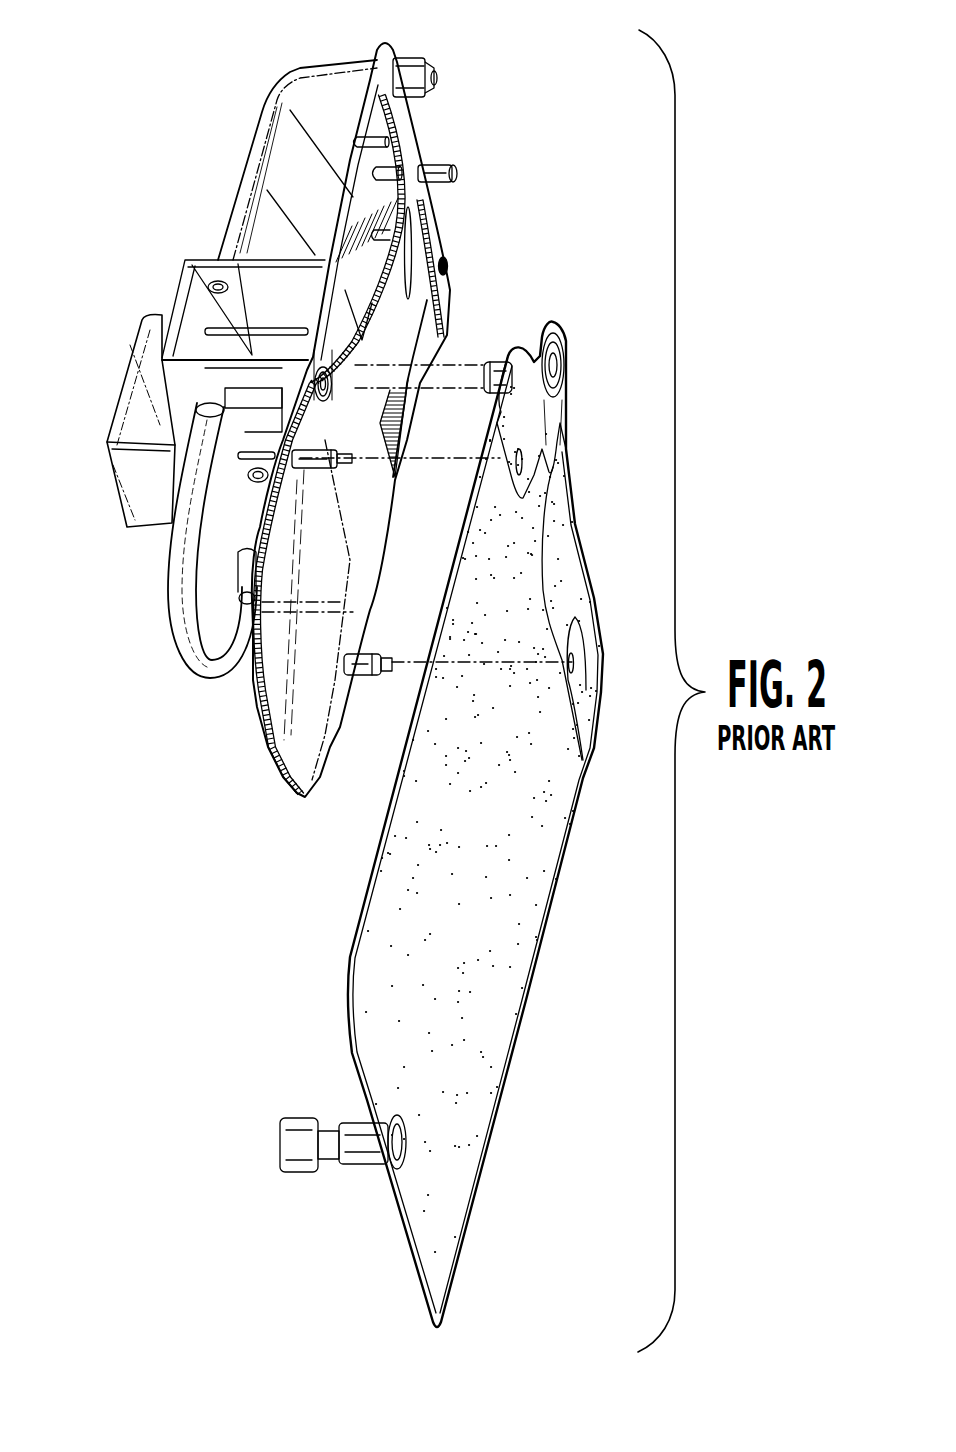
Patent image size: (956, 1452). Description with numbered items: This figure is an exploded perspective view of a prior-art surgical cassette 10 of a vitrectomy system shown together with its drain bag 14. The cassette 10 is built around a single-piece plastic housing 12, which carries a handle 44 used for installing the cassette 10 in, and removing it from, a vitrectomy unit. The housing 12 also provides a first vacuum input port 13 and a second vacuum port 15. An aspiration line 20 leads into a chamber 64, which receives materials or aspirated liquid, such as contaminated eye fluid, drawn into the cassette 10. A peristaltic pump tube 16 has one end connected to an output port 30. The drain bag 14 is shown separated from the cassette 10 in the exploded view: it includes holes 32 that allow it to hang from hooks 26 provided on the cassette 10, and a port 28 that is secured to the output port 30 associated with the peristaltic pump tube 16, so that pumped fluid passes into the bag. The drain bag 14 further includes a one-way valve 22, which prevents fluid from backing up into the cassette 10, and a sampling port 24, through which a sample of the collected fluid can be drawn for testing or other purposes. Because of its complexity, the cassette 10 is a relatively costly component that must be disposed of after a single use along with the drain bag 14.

The cassette 10 is at (176, 150).
The housing 12 is at (122, 372).
The first vacuum input port 13 is at (448, 262).
The drain bag 14 is at (334, 1011).
The second vacuum port 15 is at (430, 54).
The peristaltic pump tube 16 is at (180, 655).
The aspiration line 20 is at (237, 183).
The one-way valve 22 is at (566, 451).
The sampling port 24 is at (278, 1148).
The hooks 26 is at (315, 470).
The port 28 is at (496, 360).
The output port 30 is at (328, 396).
The holes 32 is at (505, 446).
The handle 44 is at (446, 334).
The chamber 64 is at (110, 498).